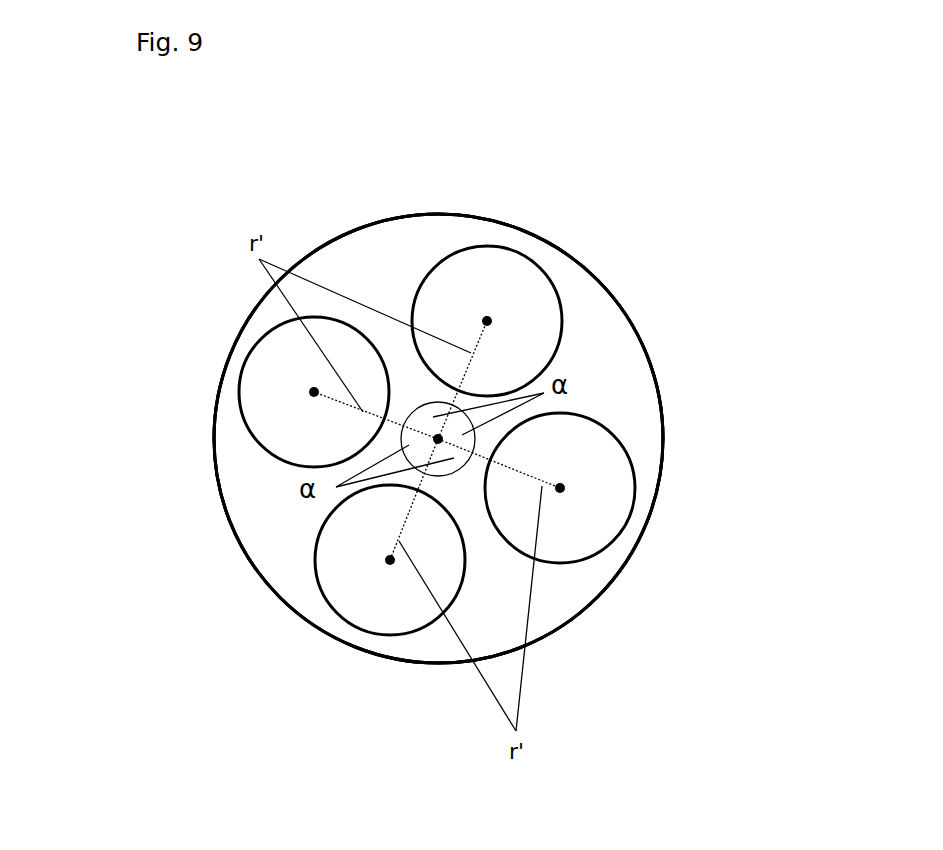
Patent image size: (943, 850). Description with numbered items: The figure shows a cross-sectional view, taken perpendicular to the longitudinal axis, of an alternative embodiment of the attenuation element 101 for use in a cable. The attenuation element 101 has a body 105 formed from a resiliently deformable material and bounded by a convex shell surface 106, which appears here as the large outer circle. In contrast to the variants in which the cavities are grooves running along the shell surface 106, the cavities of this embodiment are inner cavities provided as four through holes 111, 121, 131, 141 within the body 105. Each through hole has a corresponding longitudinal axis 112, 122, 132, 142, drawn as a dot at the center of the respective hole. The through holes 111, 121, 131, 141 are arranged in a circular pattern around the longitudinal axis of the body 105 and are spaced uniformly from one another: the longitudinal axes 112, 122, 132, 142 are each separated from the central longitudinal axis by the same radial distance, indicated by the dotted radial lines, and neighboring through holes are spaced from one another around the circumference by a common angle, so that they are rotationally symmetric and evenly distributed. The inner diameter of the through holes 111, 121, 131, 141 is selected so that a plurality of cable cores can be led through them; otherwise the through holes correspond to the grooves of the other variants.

The attenuation element 101 is at (215, 184).
The body 105 is at (363, 182).
The shell surface 106 is at (646, 350).
The through hole 111 is at (557, 287).
The longitudinal axis of the through hole 112 is at (486, 320).
The through hole 121 is at (590, 558).
The longitudinal axis of the through hole 122 is at (559, 487).
The through hole 131 is at (365, 632).
The longitudinal axis of the through hole 132 is at (389, 559).
The through hole 141 is at (241, 422).
The longitudinal axis of the through hole 142 is at (313, 391).